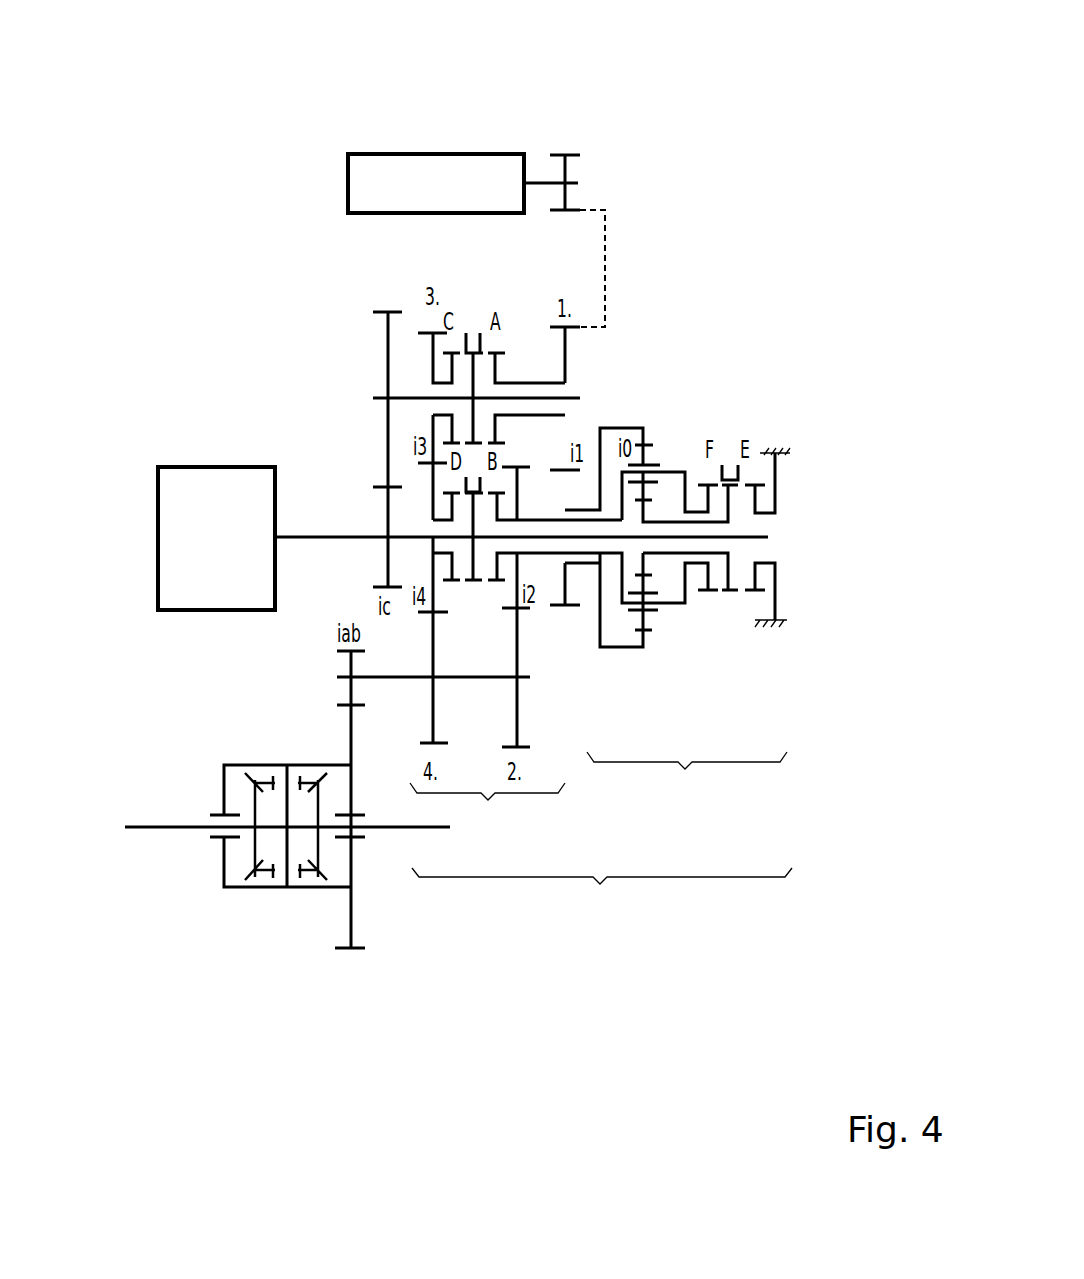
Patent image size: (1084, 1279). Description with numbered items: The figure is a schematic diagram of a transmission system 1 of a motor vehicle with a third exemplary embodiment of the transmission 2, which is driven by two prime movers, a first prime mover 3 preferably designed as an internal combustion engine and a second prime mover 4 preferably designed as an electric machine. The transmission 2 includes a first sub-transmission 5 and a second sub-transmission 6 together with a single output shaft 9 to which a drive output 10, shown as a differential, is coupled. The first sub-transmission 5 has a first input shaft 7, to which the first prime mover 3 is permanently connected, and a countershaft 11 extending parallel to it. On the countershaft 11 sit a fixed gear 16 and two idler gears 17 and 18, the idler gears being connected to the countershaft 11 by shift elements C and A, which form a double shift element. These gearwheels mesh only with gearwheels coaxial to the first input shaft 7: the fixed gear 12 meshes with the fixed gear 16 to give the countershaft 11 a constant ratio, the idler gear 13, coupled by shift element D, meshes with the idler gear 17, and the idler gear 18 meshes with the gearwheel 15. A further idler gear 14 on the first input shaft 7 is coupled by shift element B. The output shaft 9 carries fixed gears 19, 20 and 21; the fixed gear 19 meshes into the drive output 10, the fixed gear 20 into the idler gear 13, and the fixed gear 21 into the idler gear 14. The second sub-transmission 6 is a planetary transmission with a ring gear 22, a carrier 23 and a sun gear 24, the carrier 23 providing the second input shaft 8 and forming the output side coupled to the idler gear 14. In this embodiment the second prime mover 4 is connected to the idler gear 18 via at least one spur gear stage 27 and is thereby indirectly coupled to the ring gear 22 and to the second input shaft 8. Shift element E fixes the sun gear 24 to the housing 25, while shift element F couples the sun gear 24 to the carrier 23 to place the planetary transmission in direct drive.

The transmission system 1 is at (745, 132).
The transmission 2 is at (602, 899).
The first prime mover 3 is at (203, 562).
The second prime mover 4 is at (470, 183).
The first sub-transmission 5 is at (487, 815).
The second sub-transmission 6 is at (687, 783).
The first input shaft 7 is at (372, 537).
The second input shaft 8 is at (643, 453).
The ring gear 22 is at (748, 438).
The output shaft 9 is at (423, 680).
The drive output 10 is at (298, 932).
The countershaft 11 is at (373, 398).
The gearwheel 12 is at (387, 562).
The gearwheel 13 is at (433, 490).
The idler gear 14 is at (517, 492).
The gearwheel 15 is at (565, 577).
The gearwheel 16 is at (385, 358).
The gearwheel 17 is at (433, 352).
The gearwheel 18 is at (565, 353).
The gearwheel 19 is at (348, 695).
The gearwheel 20 is at (434, 728).
The gearwheel 21 is at (520, 688).
The carrier 23 is at (663, 470).
The sun gear 24 is at (650, 565).
The housing 25 is at (773, 453).
The spur gear stage 27 is at (606, 250).